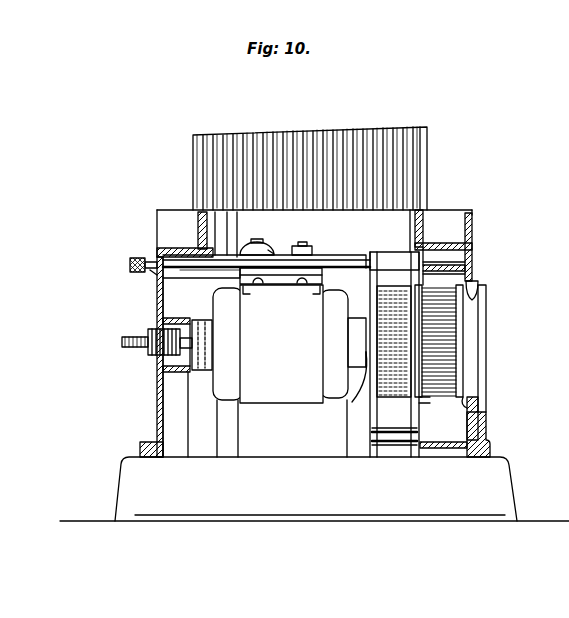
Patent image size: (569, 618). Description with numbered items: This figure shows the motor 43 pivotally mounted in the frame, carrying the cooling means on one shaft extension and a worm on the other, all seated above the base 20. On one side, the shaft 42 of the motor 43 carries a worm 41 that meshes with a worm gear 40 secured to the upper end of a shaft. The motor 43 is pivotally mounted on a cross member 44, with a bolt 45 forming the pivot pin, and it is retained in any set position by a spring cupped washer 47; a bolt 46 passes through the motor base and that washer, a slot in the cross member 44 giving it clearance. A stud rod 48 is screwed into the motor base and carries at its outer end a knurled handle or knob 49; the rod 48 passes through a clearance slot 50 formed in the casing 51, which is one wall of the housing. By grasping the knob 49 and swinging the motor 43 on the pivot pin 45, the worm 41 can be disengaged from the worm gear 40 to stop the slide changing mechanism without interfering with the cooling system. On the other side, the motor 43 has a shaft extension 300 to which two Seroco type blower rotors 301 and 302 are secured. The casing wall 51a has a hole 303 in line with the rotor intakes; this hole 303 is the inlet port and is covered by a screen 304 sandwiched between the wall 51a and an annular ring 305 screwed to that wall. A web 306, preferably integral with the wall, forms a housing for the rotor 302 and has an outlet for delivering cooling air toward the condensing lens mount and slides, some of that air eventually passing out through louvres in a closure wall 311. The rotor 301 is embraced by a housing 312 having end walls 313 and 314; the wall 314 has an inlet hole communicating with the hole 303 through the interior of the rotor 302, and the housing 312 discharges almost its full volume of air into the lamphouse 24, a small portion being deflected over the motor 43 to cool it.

The lamphouse 24 is at (418, 148).
The base 20 is at (507, 476).
The worm gear 40 is at (140, 348).
The worm 41 is at (158, 330).
The shaft of the motor 42 is at (189, 344).
The motor 43 is at (289, 344).
The cross member 44 is at (345, 256).
The bolt 45 is at (302, 252).
The bolt 46 is at (270, 250).
The spring cupped washer 47 is at (271, 250).
The stud rod 48 is at (189, 268).
The knurled handle or knob 49 is at (137, 258).
The clearance slot 50 is at (157, 279).
The casing 51 is at (163, 300).
The casing wall 51a is at (470, 265).
The shaft extension 300 is at (360, 400).
The blower rotor 301 is at (364, 412).
The blower rotor 302 is at (484, 407).
The hole 303 is at (474, 297).
The screen 304 is at (483, 318).
The annular ring 305 is at (478, 373).
The web 306 is at (455, 265).
The closure wall 311 is at (419, 402).
The housing 312 is at (376, 272).
The end wall 313 is at (368, 443).
The end wall 314 is at (421, 440).